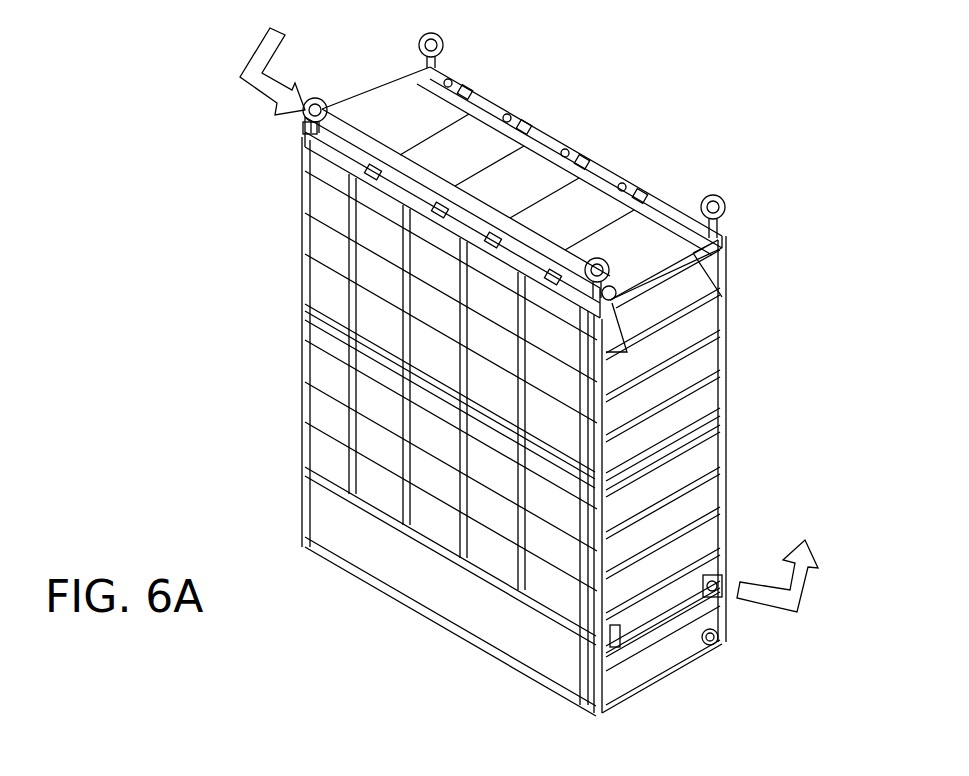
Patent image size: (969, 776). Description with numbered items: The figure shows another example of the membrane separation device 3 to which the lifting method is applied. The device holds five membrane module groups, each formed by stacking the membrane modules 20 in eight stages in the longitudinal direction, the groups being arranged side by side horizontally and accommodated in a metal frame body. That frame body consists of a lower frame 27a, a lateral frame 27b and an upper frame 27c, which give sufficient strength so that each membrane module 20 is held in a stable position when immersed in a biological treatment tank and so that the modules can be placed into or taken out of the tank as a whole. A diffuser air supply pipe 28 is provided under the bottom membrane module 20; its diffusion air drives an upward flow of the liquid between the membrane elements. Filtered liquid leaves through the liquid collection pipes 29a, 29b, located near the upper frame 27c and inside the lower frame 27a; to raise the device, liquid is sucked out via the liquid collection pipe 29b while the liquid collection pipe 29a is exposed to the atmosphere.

The membrane separation device 3 is at (210, 212).
The membrane module 20 is at (726, 532).
The lower frame 27a is at (303, 467).
The lateral frame 27b is at (305, 350).
The upper frame 27c is at (303, 133).
The diffuser air supply pipe 28 is at (712, 648).
The liquid collection pipe 29a is at (315, 98).
The liquid collection pipe 29b is at (727, 608).